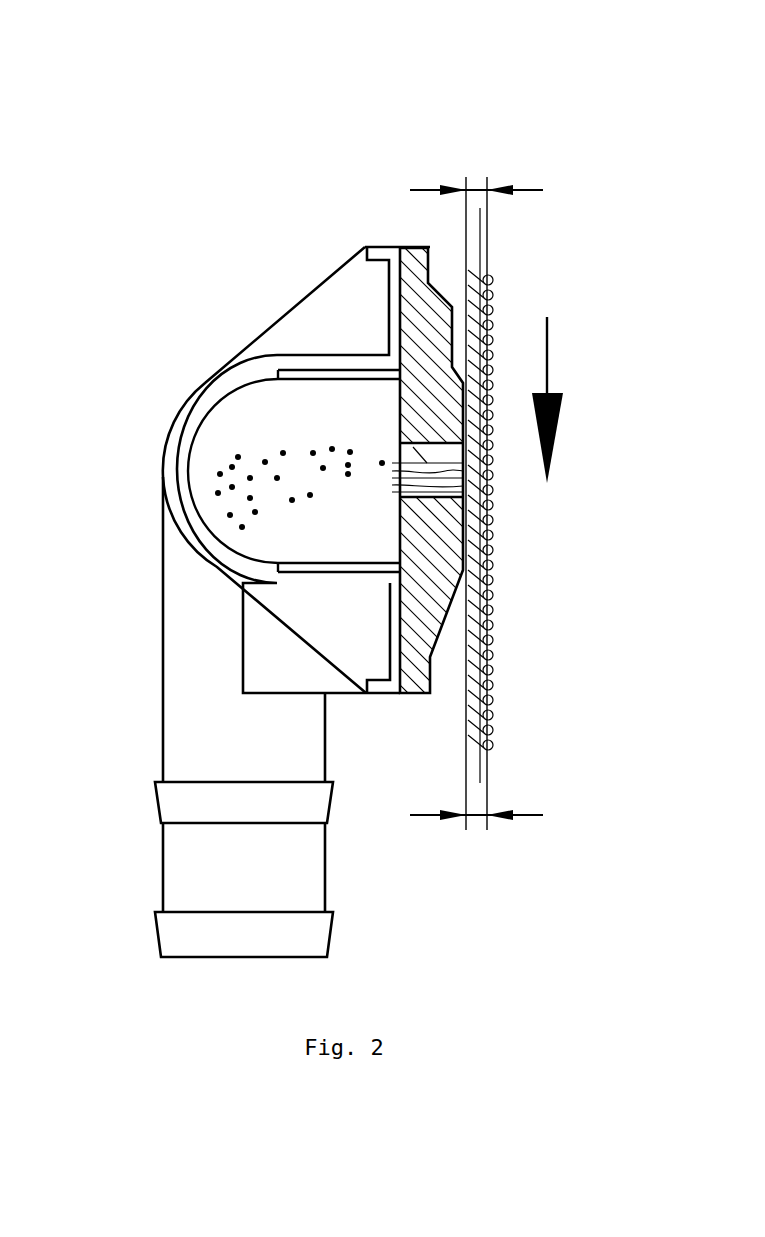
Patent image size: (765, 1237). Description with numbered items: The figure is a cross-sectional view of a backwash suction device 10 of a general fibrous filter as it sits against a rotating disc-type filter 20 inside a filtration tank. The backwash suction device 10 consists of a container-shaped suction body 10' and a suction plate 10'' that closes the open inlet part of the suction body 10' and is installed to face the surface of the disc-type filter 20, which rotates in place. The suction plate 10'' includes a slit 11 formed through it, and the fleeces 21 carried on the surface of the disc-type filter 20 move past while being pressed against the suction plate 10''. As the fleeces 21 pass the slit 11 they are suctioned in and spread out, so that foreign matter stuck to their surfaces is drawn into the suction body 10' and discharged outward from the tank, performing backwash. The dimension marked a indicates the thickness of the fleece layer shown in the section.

The backwash suction device 10 is at (327, 482).
The suction body 10' is at (242, 602).
The suction plate 10'' is at (450, 514).
The slit 11 is at (207, 393).
The disc-type filter 20 is at (508, 617).
The fleeces 21 is at (488, 278).
The mesh thickness a is at (476, 497).